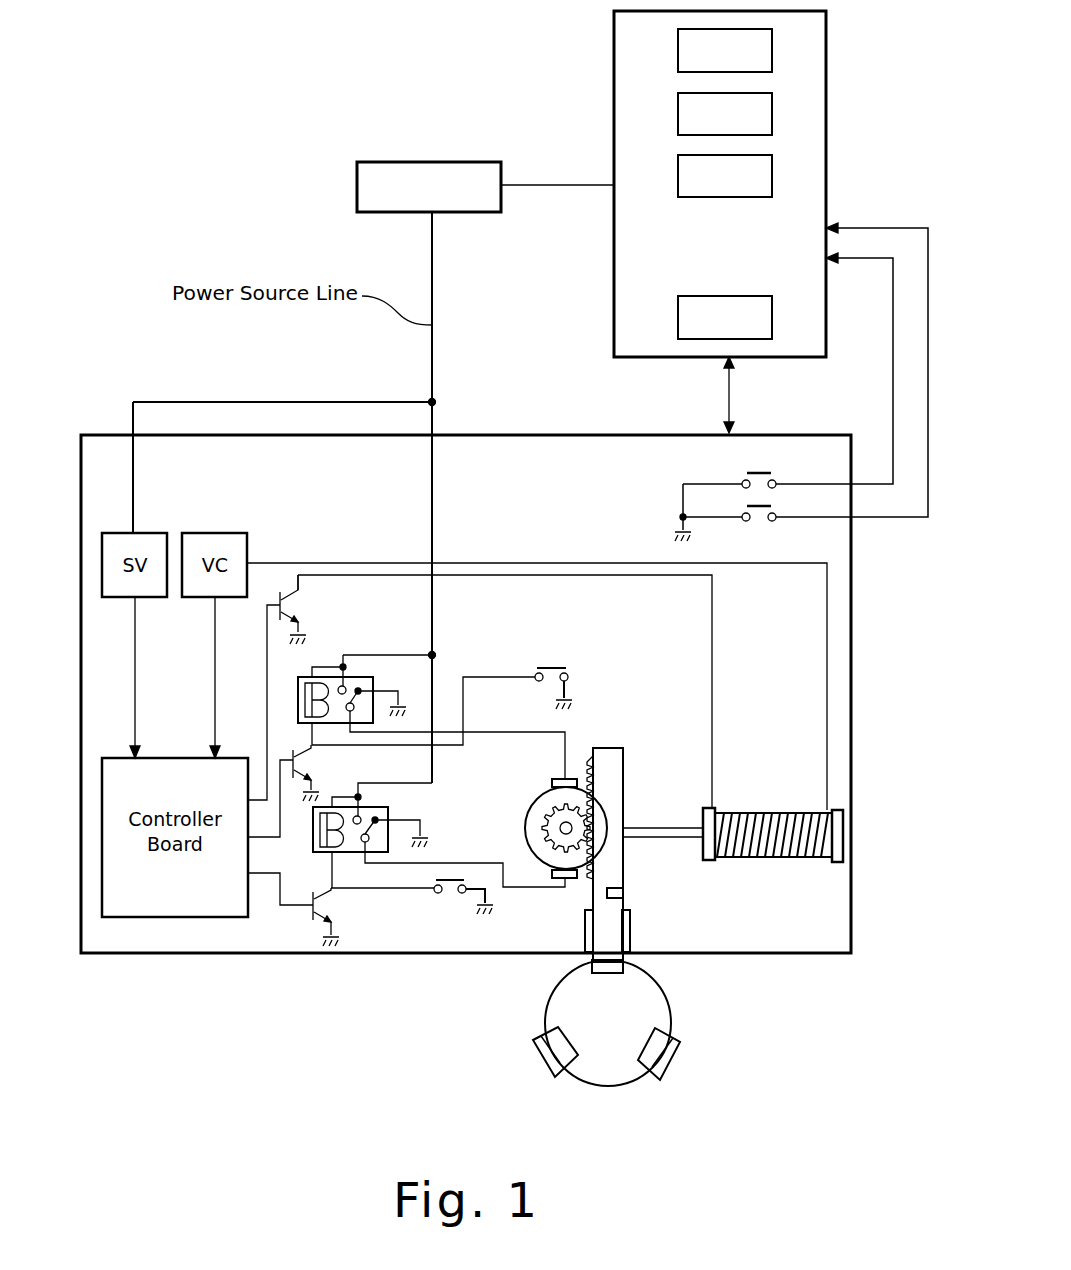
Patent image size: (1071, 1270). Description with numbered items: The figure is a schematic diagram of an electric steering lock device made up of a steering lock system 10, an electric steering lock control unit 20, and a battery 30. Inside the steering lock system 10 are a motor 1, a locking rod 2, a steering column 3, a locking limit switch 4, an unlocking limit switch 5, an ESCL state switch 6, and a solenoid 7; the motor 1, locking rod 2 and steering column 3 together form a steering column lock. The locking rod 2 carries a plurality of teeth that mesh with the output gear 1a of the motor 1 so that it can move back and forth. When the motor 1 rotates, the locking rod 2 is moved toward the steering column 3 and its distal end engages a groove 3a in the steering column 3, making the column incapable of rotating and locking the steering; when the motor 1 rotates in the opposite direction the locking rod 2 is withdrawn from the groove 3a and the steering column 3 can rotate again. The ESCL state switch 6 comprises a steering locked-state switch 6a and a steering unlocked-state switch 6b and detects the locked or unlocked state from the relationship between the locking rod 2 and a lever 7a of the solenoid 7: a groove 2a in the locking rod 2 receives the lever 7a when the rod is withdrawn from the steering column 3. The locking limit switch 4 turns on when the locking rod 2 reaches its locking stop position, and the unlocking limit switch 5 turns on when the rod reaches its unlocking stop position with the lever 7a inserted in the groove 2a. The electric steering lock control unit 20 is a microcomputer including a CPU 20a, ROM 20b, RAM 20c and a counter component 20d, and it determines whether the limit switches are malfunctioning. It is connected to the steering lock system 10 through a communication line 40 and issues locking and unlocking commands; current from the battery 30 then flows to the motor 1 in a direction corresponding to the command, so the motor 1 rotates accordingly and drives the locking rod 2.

The motor 1 is at (531, 806).
The output gear 1a is at (548, 826).
The locking rod 2 is at (623, 857).
The groove 2a is at (623, 893).
The steering column 3 is at (545, 1006).
The groove 3a is at (625, 966).
The locking limit switch 4 is at (450, 895).
The unlocking limit switch 5 is at (554, 663).
The ESCL state switch 6 is at (690, 396).
The steering locked-state switch 6a is at (743, 480).
The steering unlocked-state switch 6b is at (760, 523).
The solenoid 7 is at (777, 812).
The lever 7a is at (663, 827).
The steering lock system 10 is at (117, 435).
The electric steering lock control unit 20 is at (614, 88).
The CPU 20a is at (772, 55).
The ROM 20b is at (772, 117).
The RAM 20c is at (772, 180).
The counter component 20d is at (772, 322).
The battery 30 is at (357, 178).
The communication line 40 is at (729, 405).